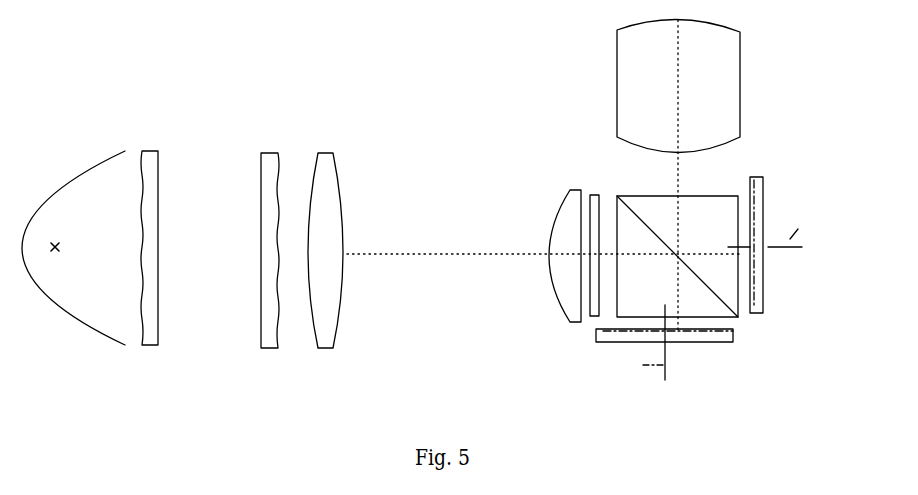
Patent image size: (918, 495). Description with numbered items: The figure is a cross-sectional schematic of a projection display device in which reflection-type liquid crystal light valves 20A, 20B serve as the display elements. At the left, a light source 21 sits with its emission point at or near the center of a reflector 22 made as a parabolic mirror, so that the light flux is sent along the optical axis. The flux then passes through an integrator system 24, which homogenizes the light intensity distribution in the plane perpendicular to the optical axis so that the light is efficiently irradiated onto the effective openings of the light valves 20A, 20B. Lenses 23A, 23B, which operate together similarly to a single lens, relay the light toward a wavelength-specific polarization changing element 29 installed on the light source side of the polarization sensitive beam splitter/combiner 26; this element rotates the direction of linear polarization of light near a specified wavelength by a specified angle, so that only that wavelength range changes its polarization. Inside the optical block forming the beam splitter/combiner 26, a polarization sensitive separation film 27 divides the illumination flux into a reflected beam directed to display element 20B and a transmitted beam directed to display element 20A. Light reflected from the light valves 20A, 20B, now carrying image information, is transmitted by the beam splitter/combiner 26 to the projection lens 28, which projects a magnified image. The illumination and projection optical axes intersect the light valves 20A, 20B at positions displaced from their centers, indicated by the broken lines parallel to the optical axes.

The reflection-type liquid crystal light valve 20A is at (757, 310).
The reflection-type liquid crystal light valve 20B is at (725, 342).
The light source 21 is at (58, 250).
The reflector 22 is at (83, 325).
The lens 23A is at (325, 157).
The lens 23B is at (575, 190).
The integrator system 24 is at (279, 359).
The polarization sensitive beam splitter/combiner 26 is at (705, 200).
The polarization sensitive separation film 27 is at (635, 208).
The projection lens 28 is at (622, 68).
The wavelength-specific polarization changing element 29 is at (595, 317).